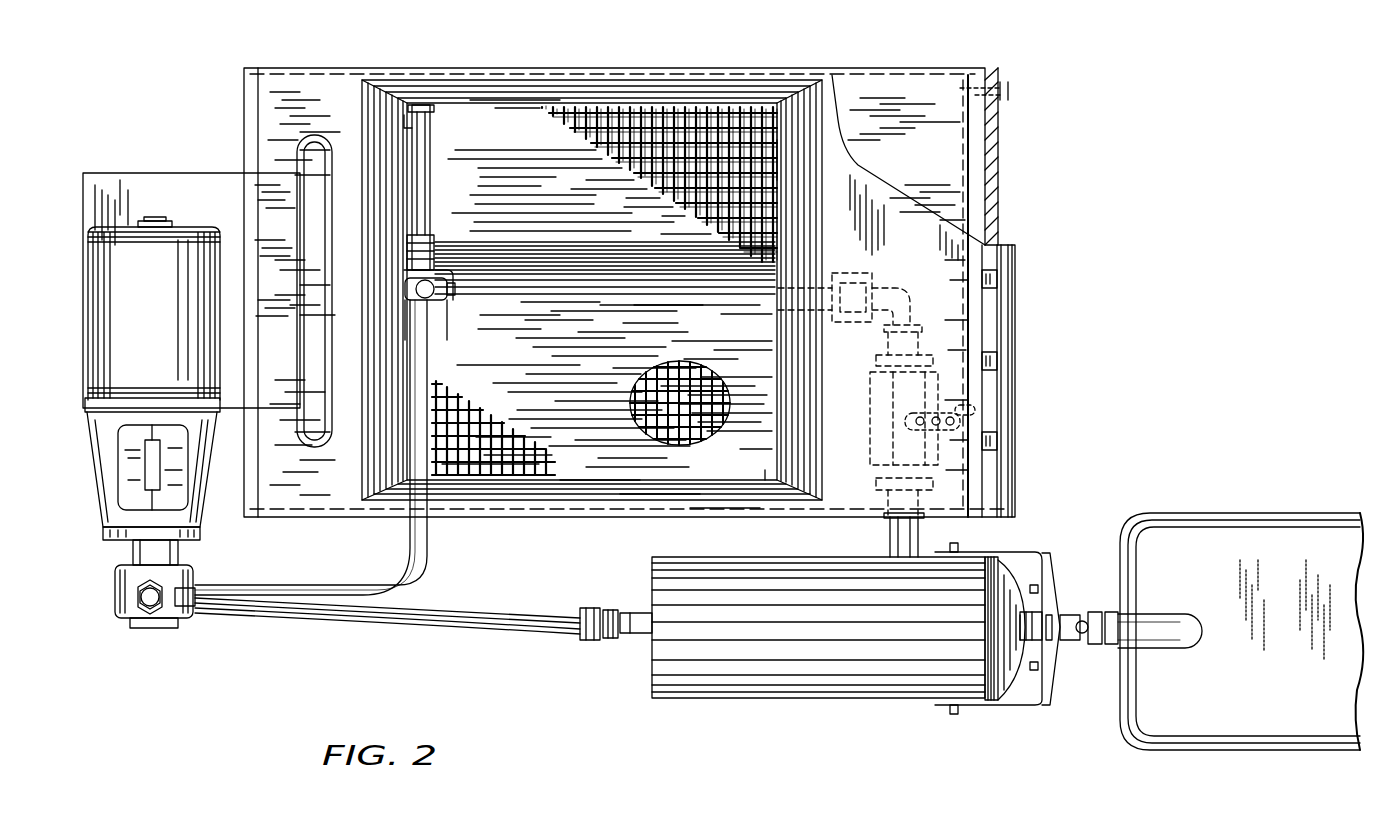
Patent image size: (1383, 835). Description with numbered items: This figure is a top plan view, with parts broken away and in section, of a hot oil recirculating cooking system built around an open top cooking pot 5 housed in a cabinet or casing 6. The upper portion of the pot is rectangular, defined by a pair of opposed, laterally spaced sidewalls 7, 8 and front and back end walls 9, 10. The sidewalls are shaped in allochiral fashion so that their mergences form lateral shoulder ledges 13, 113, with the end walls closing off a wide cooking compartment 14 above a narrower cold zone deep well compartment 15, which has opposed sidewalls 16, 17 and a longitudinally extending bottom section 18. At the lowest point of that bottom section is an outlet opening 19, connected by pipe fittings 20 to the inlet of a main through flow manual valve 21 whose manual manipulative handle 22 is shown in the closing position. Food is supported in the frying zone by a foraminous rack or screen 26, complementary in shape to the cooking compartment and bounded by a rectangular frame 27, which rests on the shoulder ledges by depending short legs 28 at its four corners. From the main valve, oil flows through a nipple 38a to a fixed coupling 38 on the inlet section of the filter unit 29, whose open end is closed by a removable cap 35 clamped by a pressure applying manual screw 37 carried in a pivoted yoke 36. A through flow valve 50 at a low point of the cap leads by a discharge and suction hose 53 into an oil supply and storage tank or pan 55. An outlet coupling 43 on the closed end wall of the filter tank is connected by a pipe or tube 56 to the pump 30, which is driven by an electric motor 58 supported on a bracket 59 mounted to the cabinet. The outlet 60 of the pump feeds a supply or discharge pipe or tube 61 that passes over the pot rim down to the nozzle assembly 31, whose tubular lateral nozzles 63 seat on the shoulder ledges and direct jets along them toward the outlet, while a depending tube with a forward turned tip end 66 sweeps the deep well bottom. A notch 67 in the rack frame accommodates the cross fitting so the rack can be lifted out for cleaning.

The open top cooking pot 5 is at (462, 126).
The cabinet or casing 6 is at (346, 67).
The sidewall 7 is at (594, 482).
The sidewall 8 is at (492, 104).
The front end wall 9 is at (780, 162).
The back end wall 10 is at (408, 138).
The shoulder ledge 13 is at (650, 462).
The cooking compartment 14 is at (598, 418).
The cold zone deep well compartment 15 is at (698, 312).
The sidewall of cold zone deep well 16 is at (572, 318).
The sidewall of cold zone deep well 17 is at (562, 276).
The bottom section 18 is at (770, 287).
The outlet opening 19 is at (812, 290).
The pipe fittings 20 is at (888, 328).
The main through flow manual valve 21 is at (882, 440).
The manual manipulative handle 22 is at (962, 410).
The foraminous rack or screen 26 is at (682, 126).
The rectangular frame 27 is at (714, 482).
The depending short legs 28 is at (776, 478).
The filter unit 29 is at (742, 700).
The pump 30 is at (192, 626).
The nozzle assembly 31 is at (408, 288).
The removable cap 35 is at (1002, 655).
The yoke 36 is at (1052, 694).
The pressure applying manual screw 37 is at (1070, 616).
The fixed coupling 38 is at (892, 537).
The nipple 38a is at (888, 498).
The outlet coupling 43 is at (627, 641).
The through flow valve 50 is at (1070, 650).
The discharge and suction hose 53 is at (1168, 624).
The oil supply and storage tank or pan 55 is at (1248, 706).
The pipe or tube 56 is at (455, 622).
The electric motor 58 is at (152, 310).
The bracket 59 is at (172, 186).
The outlet of the pump 60 is at (136, 597).
The supply or discharge pipe or tube 61 is at (422, 552).
The tubular lateral nozzles 63 is at (431, 175).
The tip end 66 is at (450, 292).
The notch 67 is at (448, 305).
The shoulder ledge 113 is at (518, 132).